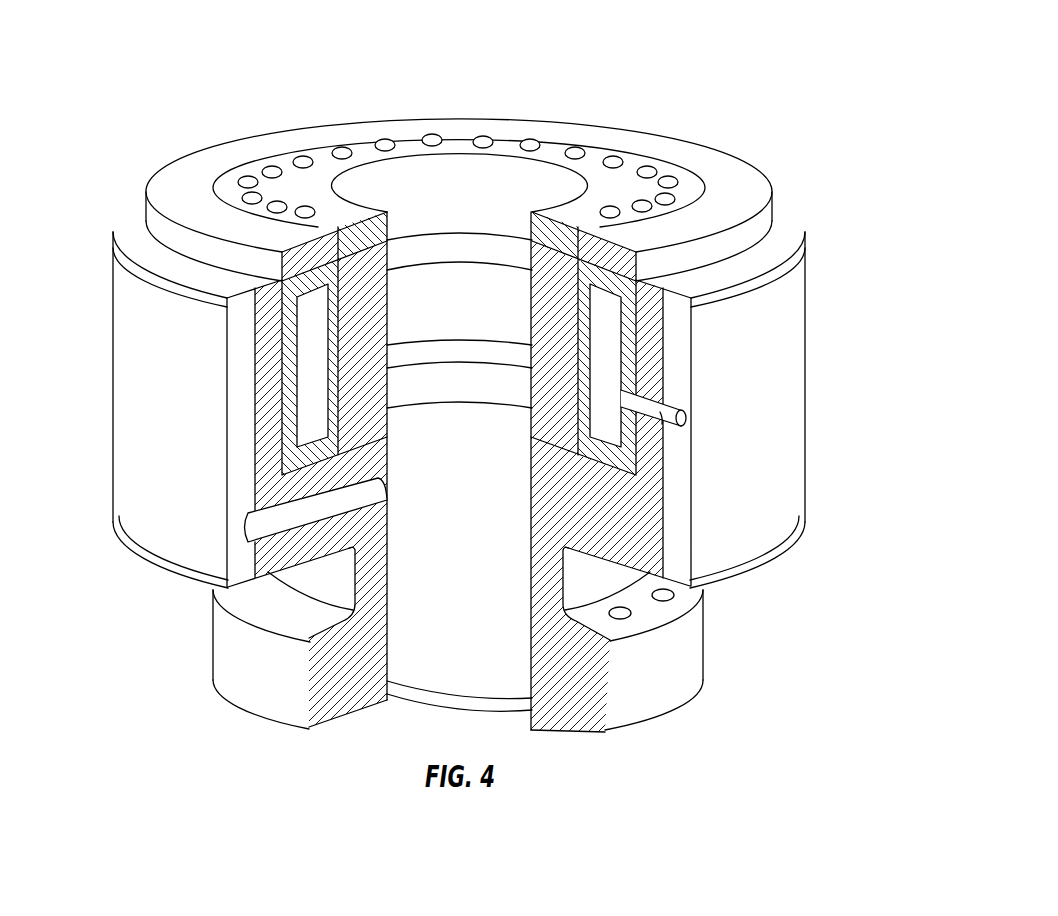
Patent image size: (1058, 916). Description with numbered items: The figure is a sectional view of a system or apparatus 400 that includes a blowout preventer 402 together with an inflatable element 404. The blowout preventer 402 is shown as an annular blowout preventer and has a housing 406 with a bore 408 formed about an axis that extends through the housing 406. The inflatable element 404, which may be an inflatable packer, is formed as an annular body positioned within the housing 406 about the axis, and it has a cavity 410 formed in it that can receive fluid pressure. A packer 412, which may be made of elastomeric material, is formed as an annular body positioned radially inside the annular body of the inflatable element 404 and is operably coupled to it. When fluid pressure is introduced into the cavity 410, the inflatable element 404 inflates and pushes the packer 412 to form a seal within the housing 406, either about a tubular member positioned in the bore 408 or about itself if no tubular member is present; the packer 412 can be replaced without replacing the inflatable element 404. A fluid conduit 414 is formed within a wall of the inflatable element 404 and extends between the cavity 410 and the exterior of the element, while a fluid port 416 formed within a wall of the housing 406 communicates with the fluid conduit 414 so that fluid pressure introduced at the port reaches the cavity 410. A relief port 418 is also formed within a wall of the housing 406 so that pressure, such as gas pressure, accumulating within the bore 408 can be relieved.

The system or apparatus 400 is at (722, 73).
The blowout preventer 402 is at (822, 175).
The inflatable element 404 is at (266, 330).
The housing 406 is at (784, 467).
The bore 408 is at (478, 226).
The cavity 410 is at (296, 392).
The packer 412 is at (527, 354).
The fluid conduit 414 is at (652, 410).
The fluid port 416 is at (686, 414).
The relief port 418 is at (243, 533).